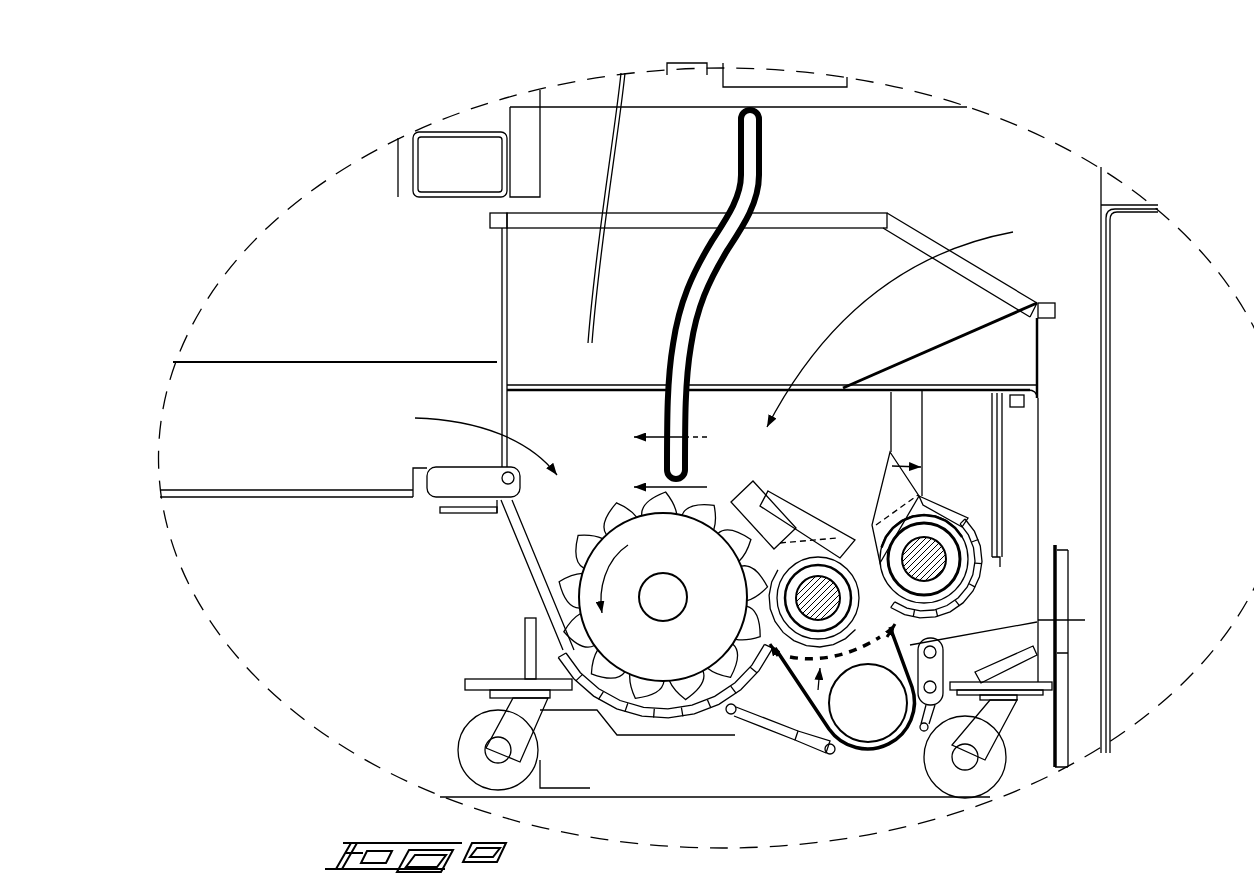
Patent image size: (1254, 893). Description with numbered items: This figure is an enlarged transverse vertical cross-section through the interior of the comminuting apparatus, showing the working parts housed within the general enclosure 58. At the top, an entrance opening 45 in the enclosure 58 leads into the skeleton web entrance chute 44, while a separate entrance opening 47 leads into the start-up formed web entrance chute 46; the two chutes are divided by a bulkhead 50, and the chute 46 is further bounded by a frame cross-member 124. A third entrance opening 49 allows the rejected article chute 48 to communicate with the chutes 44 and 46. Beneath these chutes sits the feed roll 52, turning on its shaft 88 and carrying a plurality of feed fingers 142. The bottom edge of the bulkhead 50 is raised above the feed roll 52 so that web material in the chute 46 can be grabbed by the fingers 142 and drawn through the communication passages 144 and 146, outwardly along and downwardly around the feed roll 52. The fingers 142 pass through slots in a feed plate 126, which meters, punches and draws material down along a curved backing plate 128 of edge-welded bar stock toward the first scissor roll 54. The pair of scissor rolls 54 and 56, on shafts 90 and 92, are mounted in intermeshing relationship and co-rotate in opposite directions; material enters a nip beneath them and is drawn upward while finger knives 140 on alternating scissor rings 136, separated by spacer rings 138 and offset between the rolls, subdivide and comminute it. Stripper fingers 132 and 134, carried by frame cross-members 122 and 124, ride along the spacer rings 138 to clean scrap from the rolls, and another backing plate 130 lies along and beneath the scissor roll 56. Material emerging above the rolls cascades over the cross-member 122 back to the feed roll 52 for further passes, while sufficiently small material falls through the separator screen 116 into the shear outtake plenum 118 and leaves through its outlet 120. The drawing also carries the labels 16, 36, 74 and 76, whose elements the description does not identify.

The apparatus detail region 16 is at (390, 640).
The work table 36 is at (307, 362).
The skeleton web entrance chute 44 is at (640, 339).
The entrance opening 45 is at (635, 253).
The start-up formed web entrance chute 46 is at (800, 343).
The entrance opening 47 is at (870, 262).
The rejected article chute 48 is at (493, 402).
The entrance opening 49 is at (507, 420).
The bulkhead 50 is at (713, 285).
The feed roll 52 is at (582, 556).
The scissor roll 54 is at (785, 727).
The scissor roll 56 is at (982, 532).
The general enclosure 58 is at (503, 289).
The tube inlet 74 is at (780, 255).
The tube inlet 76 is at (780, 255).
The shaft 88 is at (667, 613).
The shaft 90 is at (810, 597).
The shaft 92 is at (933, 562).
The separator screen 116 is at (803, 670).
The shear outtake plenum 118 is at (822, 700).
The outlet 120 is at (876, 740).
The frame cross-member 122 is at (750, 533).
The frame cross-member 124 is at (907, 432).
The feed plate 126 is at (560, 620).
The backing plate 128 is at (613, 703).
The backing plate 130 is at (988, 604).
The stripper finger 132 is at (782, 513).
The stripper finger 134 is at (888, 485).
The scissor rings 136 is at (957, 517).
The spacer rings 138 is at (973, 517).
The finger knives 140 is at (850, 527).
The feed fingers 142 is at (585, 540).
The communication passage 144 is at (657, 487).
The communication passage 146 is at (652, 437).